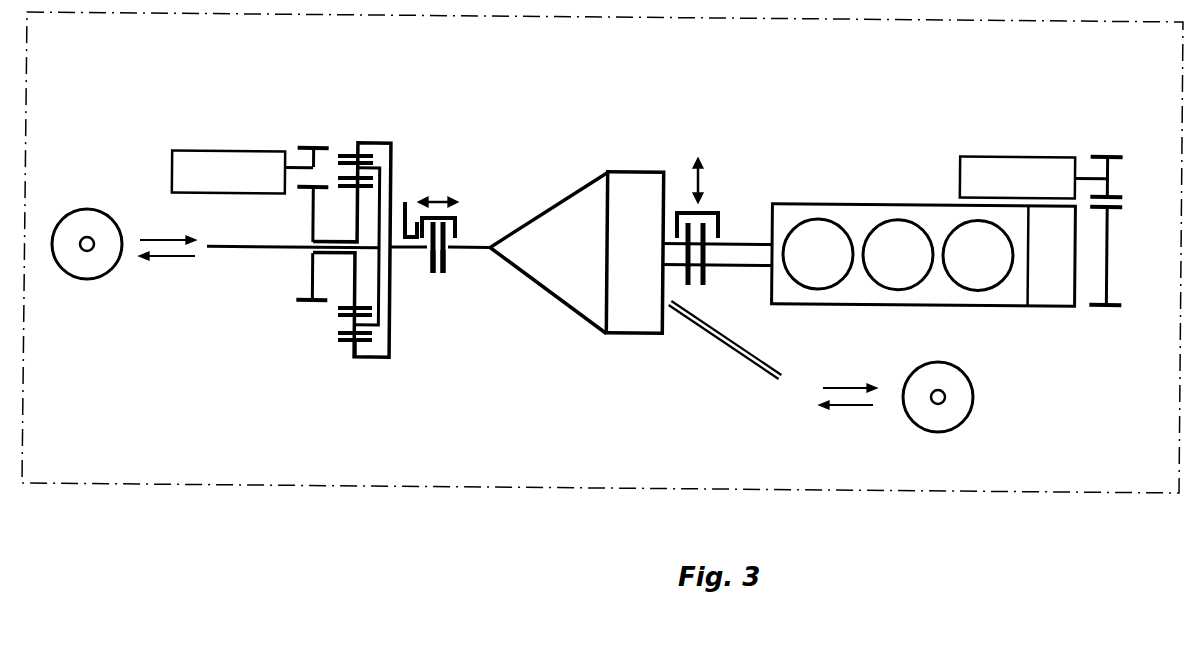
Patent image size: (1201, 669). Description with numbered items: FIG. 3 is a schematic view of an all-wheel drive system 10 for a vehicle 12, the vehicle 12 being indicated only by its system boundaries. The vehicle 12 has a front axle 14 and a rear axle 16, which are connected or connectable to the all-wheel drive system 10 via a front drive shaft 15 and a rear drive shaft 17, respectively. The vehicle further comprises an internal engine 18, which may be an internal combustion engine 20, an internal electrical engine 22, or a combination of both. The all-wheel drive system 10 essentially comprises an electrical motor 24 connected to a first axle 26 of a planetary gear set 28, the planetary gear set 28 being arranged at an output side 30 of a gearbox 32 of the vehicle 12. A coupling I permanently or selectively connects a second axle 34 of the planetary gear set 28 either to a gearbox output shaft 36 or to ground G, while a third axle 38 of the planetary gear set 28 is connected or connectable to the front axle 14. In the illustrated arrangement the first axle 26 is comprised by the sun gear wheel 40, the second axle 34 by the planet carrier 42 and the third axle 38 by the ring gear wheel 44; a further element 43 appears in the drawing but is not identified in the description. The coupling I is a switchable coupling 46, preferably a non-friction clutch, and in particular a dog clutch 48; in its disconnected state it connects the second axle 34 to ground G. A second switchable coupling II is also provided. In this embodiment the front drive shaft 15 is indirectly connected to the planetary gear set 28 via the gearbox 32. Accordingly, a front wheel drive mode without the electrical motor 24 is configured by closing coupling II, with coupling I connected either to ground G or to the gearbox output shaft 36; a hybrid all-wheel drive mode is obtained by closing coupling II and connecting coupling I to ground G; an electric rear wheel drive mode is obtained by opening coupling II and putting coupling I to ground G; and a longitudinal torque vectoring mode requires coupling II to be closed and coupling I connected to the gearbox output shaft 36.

The all-wheel drive system 10 is at (800, 105).
The vehicle 12 is at (1148, 70).
The front axle 14 is at (850, 385).
The front drive shaft 15 is at (710, 335).
The rear axle 16 is at (139, 244).
The rear drive shaft 17 is at (240, 248).
The internal engine 18 is at (1041, 335).
The internal combustion engine 20 is at (1041, 271).
The internal electrical engine 22 is at (1005, 191).
The electrical motor 24 is at (217, 184).
The first axle 26 is at (301, 276).
The planetary gear set 28 is at (370, 118).
The output side 30 is at (481, 225).
The gearbox 32 is at (621, 266).
The second axle 34 is at (396, 270).
The gearbox output shaft 36 is at (458, 250).
The third axle 38 is at (380, 366).
The sun gear wheel 40 is at (349, 207).
The planet carrier 42 is at (357, 357).
The gear 43 is at (338, 315).
The ring gear wheel 44 is at (370, 360).
The switchable coupling 46 is at (450, 176).
The dog clutch 48 is at (438, 261).
The ground G is at (403, 200).
The coupling I is at (438, 193).
The second switchable coupling II is at (717, 221).